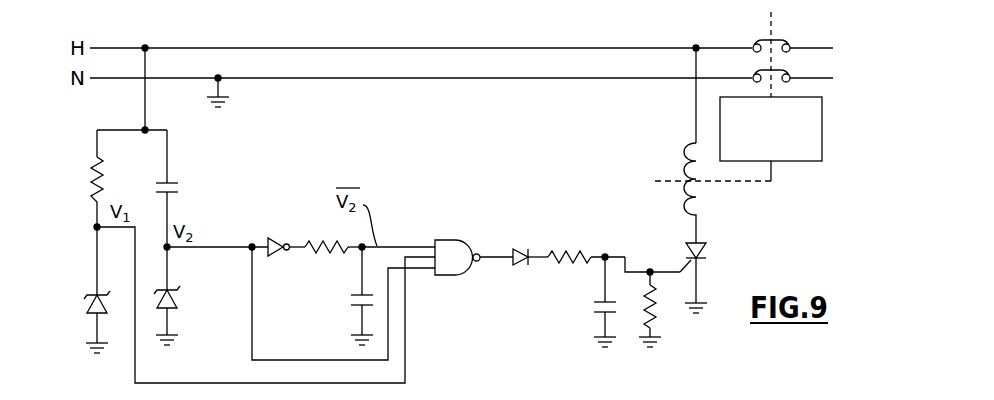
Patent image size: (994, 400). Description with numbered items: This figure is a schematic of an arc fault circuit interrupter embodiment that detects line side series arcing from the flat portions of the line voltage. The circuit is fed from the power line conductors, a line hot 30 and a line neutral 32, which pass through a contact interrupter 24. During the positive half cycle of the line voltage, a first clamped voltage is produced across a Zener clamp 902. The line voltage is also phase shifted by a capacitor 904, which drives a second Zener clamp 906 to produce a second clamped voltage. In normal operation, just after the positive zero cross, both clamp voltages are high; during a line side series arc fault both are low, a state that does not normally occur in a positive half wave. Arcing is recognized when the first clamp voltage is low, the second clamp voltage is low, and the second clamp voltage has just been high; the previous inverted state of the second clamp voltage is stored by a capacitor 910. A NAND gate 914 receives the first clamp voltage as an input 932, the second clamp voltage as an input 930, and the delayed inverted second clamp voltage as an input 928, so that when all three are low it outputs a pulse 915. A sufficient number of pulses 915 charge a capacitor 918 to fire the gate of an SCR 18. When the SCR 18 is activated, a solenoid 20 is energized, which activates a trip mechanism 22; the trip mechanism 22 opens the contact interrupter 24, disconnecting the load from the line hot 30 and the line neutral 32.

The line hot 30 is at (365, 47).
The line neutral 32 is at (380, 79).
The contact interrupter 24 is at (776, 40).
The trip mechanism 22 is at (823, 127).
The solenoid 20 is at (690, 161).
The SCR 18 is at (705, 250).
The Zener clamp 902 is at (97, 295).
The capacitor 904 is at (178, 183).
The Zener clamp 906 is at (178, 298).
The capacitor 910 is at (355, 305).
The input 928 is at (403, 247).
The input 930 is at (397, 268).
The input 932 is at (405, 323).
The NAND gate 914 is at (486, 262).
The pulse 915 is at (503, 256).
The capacitor 918 is at (616, 318).